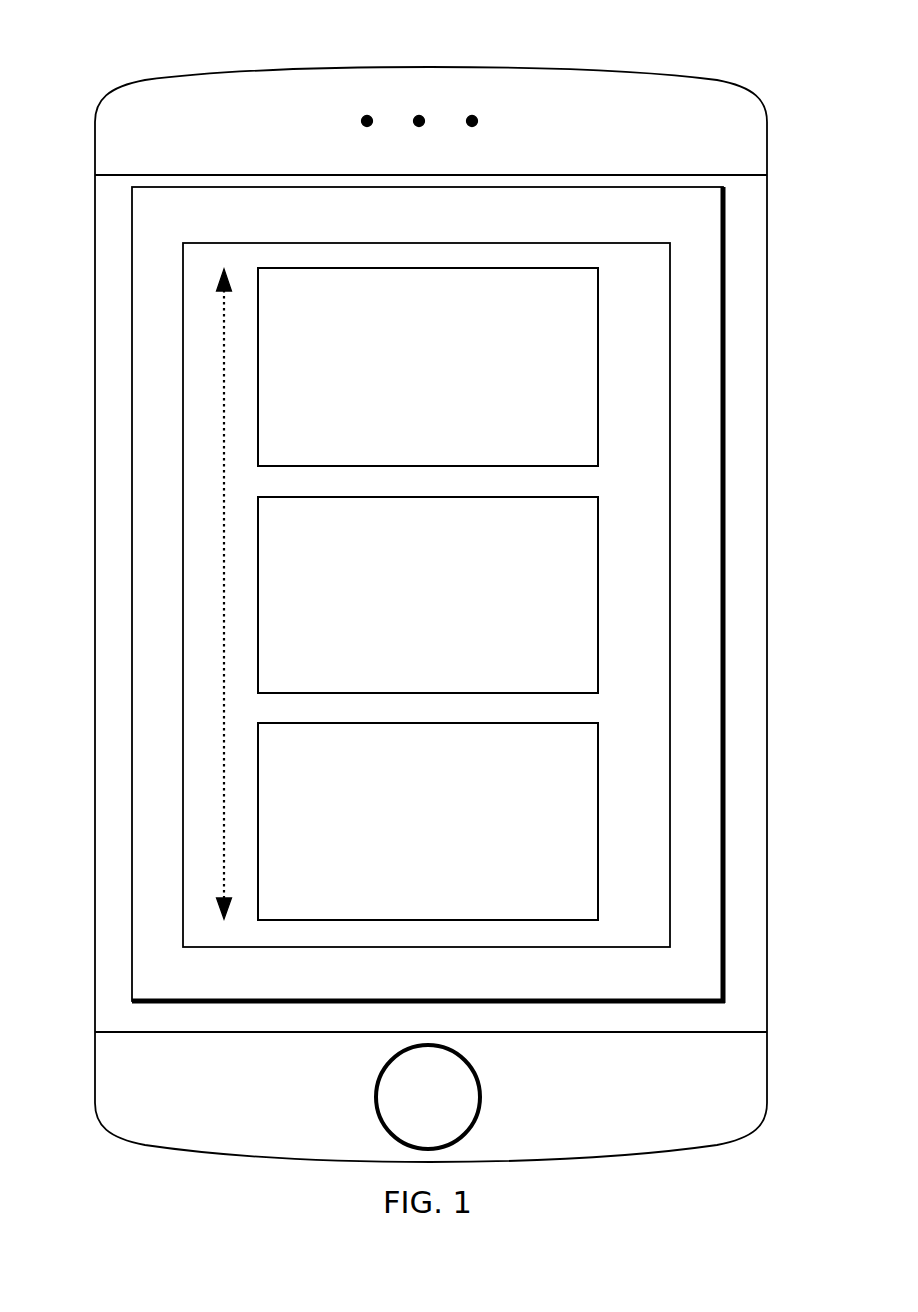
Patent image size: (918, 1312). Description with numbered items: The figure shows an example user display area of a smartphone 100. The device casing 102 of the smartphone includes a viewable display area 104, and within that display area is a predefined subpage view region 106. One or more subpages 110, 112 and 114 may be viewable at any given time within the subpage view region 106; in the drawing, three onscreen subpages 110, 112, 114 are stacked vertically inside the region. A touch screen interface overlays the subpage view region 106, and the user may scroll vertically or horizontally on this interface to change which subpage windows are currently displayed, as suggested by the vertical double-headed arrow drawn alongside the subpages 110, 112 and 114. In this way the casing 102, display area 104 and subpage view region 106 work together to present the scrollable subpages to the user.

The mobile computing device 100 is at (65, 43).
The device casing 102 is at (685, 90).
The viewable display area 104 is at (703, 240).
The subpage view region 106 is at (658, 342).
The subpage 110 is at (428, 367).
The subpage 112 is at (428, 595).
The subpage 114 is at (428, 821).